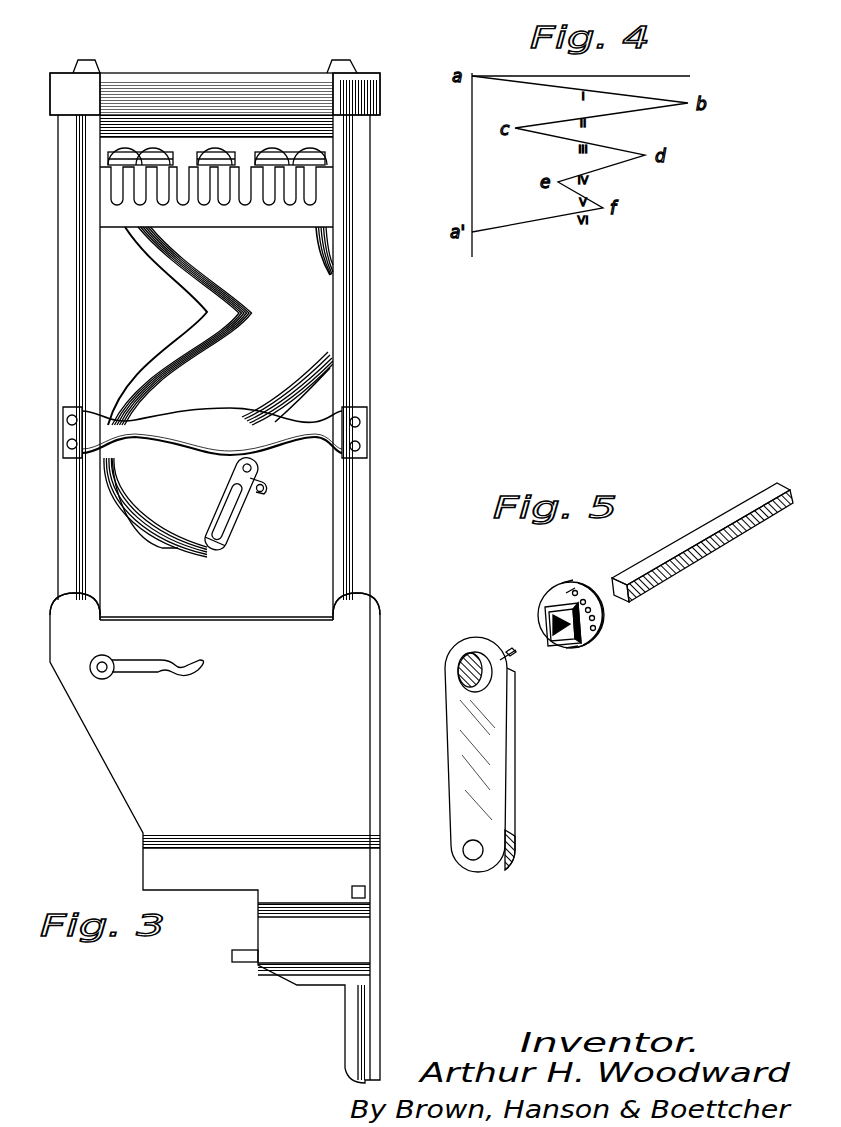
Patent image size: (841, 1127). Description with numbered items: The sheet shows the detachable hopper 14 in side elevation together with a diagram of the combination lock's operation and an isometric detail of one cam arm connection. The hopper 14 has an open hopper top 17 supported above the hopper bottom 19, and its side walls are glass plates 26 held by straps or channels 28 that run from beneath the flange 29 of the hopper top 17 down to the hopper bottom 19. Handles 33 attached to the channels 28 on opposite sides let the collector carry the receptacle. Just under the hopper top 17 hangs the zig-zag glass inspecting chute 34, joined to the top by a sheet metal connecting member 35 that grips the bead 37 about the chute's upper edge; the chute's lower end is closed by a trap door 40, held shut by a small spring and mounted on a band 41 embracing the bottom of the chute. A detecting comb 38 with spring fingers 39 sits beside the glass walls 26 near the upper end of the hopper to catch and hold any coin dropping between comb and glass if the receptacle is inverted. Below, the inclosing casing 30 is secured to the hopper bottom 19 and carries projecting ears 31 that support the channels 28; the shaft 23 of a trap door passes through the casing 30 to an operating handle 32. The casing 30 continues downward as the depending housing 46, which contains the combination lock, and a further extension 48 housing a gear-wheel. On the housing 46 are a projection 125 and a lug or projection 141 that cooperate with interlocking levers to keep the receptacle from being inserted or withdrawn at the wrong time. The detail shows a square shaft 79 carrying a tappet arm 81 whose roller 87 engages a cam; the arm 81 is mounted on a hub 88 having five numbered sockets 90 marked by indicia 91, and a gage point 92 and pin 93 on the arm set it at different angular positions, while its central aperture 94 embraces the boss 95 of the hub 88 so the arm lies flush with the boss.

In FIG. 3, the hopper 14 is at (450, 370).
In FIG. 3, the hopper top 17 is at (232, 82).
In FIG. 3, the hopper bottom 19 is at (231, 622).
In FIG. 3, the shaft 23 is at (98, 672).
In FIG. 3, the glass plates 26 is at (130, 295).
In FIG. 3, the straps or channels 28 is at (68, 380).
In FIG. 3, the flange 29 is at (378, 103).
In FIG. 3, the inclosing casing 30 is at (215, 838).
In FIG. 3, the projecting ears 31 is at (215, 607).
In FIG. 3, the operating handle 32 is at (143, 670).
In FIG. 3, the handles 33 is at (215, 432).
In FIG. 3, the zig-zag glass inspecting chute 34 is at (215, 362).
In FIG. 3, the sheet metal connecting member 35 is at (112, 150).
In FIG. 3, the bead 37 is at (120, 160).
In FIG. 3, the detecting comb 38 is at (272, 207).
In FIG. 3, the spring fingers 39 is at (238, 192).
In FIG. 3, the trap door 40 is at (225, 530).
In FIG. 3, the band 41 is at (266, 489).
In FIG. 3, the depending housing 46 is at (362, 930).
In FIG. 3, the extension 48 is at (365, 1017).
In FIG. 5, the square shaft 79 is at (672, 556).
In FIG. 5, the tappet arm 81 is at (512, 758).
In FIG. 5, the rollers 87 is at (516, 846).
In FIG. 5, the hub 88 is at (588, 645).
In FIG. 5, the sockets or holes 90 is at (570, 594).
In FIG. 5, the indicia 91 is at (608, 606).
In FIG. 5, the gage point 92 is at (504, 660).
In FIG. 5, the pin 93 is at (509, 650).
In FIG. 5, the central aperture 94 is at (466, 676).
In FIG. 5, the boss 95 is at (566, 614).
In FIG. 3, the projection 125 is at (232, 955).
In FIG. 3, the projection 141 is at (370, 893).